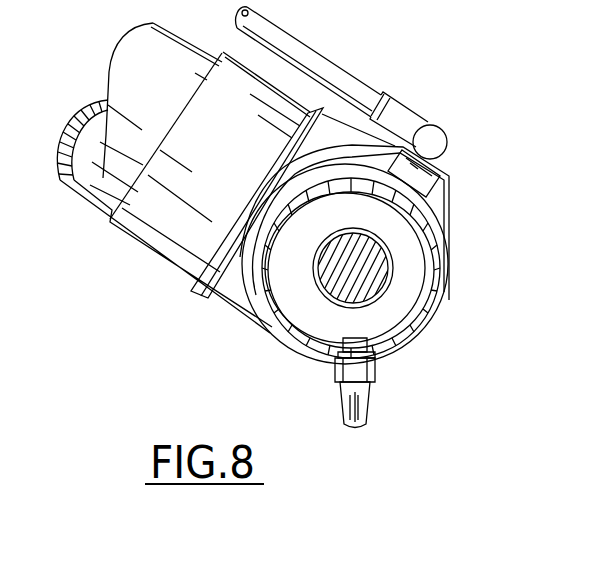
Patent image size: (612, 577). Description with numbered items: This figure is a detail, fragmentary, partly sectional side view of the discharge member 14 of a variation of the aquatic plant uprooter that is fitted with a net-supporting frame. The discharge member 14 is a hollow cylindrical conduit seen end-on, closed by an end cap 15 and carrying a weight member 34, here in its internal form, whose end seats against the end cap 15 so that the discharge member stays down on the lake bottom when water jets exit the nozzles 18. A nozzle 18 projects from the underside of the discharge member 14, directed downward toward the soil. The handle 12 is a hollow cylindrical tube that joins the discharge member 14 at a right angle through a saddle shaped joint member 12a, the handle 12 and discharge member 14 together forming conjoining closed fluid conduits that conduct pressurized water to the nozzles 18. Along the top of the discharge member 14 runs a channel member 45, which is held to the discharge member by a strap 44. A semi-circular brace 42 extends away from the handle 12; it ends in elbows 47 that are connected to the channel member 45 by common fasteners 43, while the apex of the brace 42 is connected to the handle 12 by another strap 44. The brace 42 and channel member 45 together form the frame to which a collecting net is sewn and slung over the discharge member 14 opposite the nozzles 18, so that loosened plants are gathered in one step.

The handle 12 is at (187, 45).
The saddle shaped joint member 12a is at (150, 252).
The semi-circular brace 42 is at (341, 68).
The common fasteners 43 is at (444, 130).
The elbows 47 is at (450, 140).
The channel member 45 is at (437, 198).
The strap 44 is at (207, 297).
The discharge member 14 is at (425, 328).
The closed end cap 15 is at (350, 303).
The weight member 34 is at (390, 273).
The nozzles 18 is at (338, 398).